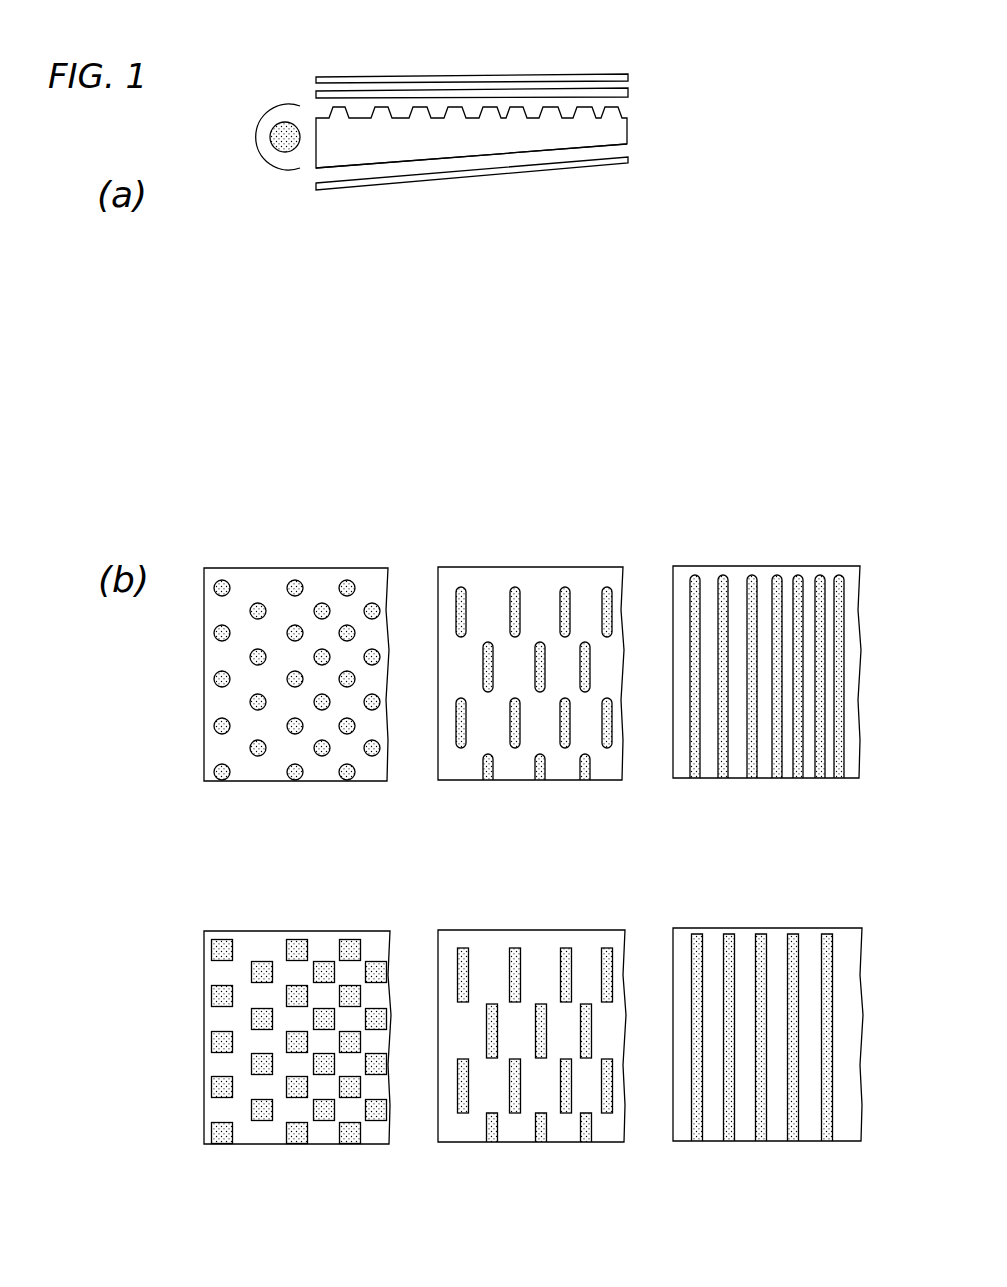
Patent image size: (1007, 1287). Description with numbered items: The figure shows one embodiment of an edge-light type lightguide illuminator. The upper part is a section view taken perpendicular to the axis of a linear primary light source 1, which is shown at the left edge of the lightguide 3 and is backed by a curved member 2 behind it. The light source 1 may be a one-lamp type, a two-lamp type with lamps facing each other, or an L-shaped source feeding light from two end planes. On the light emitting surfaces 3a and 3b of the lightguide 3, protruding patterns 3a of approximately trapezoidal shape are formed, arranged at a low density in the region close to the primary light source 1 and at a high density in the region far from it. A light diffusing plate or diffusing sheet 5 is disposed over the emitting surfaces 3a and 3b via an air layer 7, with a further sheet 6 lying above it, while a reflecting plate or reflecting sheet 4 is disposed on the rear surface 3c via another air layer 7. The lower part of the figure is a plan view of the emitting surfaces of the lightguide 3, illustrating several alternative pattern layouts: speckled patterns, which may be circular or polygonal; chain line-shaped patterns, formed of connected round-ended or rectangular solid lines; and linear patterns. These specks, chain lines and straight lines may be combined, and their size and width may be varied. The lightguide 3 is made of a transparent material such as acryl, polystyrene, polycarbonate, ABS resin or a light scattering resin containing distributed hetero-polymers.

The linear primary light source 1 is at (282, 128).
The reflector 2 is at (272, 158).
The lightguide 3 is at (375, 138).
The protruding patterns 3a is at (490, 110).
The emitting surface 3b is at (438, 113).
The rear surface 3c is at (513, 163).
The reflecting sheet 4 is at (632, 163).
The diffusing sheet 5 is at (633, 92).
The prism sheet 6 is at (633, 72).
The air layer 7 is at (540, 102).